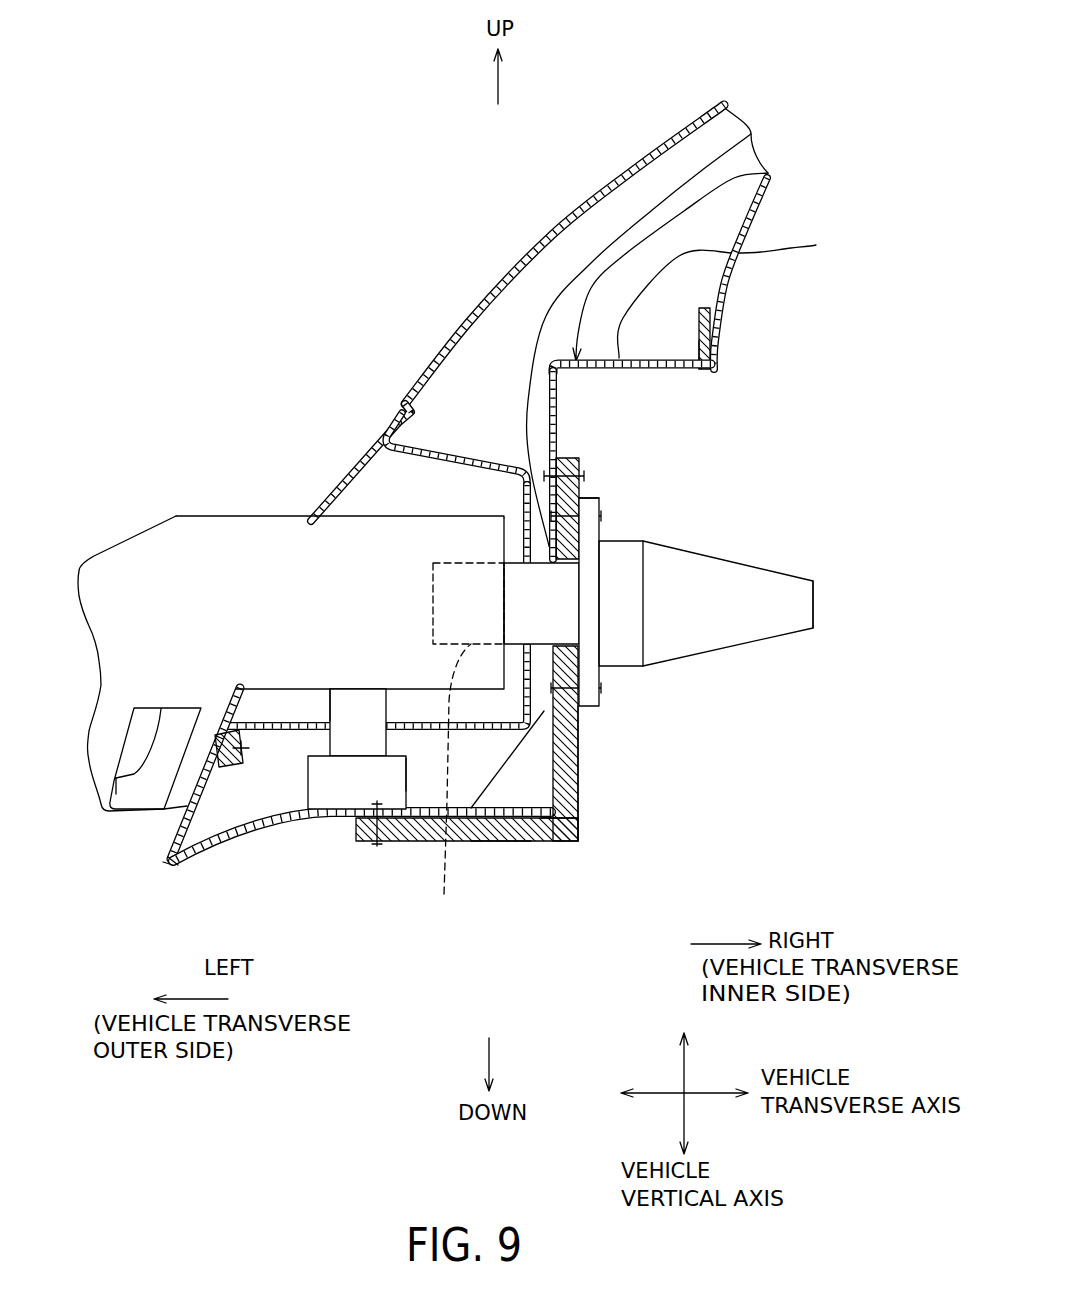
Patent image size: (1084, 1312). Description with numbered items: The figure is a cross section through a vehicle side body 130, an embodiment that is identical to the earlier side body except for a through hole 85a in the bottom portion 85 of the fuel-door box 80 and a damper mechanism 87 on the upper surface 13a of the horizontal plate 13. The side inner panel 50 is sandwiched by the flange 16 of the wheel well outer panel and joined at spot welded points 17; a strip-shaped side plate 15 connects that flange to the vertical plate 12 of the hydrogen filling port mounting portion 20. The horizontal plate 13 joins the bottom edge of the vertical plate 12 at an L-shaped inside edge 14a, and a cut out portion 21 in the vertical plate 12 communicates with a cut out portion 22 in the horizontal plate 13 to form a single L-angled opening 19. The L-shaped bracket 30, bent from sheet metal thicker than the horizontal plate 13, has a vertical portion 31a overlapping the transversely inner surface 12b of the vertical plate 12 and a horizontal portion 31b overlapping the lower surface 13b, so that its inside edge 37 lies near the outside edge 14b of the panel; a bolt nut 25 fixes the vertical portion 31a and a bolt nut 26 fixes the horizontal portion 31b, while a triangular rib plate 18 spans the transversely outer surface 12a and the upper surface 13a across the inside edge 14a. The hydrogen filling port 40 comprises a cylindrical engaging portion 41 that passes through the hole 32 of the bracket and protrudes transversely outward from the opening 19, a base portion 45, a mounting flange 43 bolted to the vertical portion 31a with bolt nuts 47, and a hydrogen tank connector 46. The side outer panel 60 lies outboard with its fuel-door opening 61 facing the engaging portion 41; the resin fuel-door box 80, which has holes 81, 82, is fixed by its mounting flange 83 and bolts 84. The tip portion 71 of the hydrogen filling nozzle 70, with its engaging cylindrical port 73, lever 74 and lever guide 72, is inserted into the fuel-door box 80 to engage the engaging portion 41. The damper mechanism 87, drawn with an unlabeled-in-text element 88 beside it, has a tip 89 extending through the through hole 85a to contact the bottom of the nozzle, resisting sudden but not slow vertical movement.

The side body 130 is at (255, 149).
The side outer panel 60 is at (548, 212).
The cut out portion 21 is at (750, 133).
The hydrogen filling port mounting portion 20 is at (767, 172).
The side inner panel 50 is at (769, 214).
The side plate 15 is at (738, 290).
The flange 16 is at (698, 302).
The spot welded points 17 is at (698, 318).
The vertical plate 12 is at (692, 369).
The transversely outer surface 12a is at (590, 380).
The transversely inner surface 12b is at (558, 425).
The L-shaped bracket 30 is at (580, 440).
The bolt nut 25 is at (593, 459).
The mounting flange 43 is at (596, 497).
The bolt nuts 47 is at (598, 510).
The hydrogen filling port 40 is at (769, 556).
The base portion 45 is at (620, 548).
The hydrogen tank connector 46 is at (781, 594).
The hole 32 is at (578, 613).
The vertical portion 31a is at (580, 743).
The opening 19 is at (577, 770).
The inside edge 37 is at (560, 838).
The outside edge 14b is at (577, 825).
The inside edge 14a is at (540, 822).
The rib plate 18 is at (497, 838).
The cut out portion 22 is at (508, 790).
The horizontal portion 31b is at (470, 740).
The engaging portion 41 is at (447, 781).
The horizontal plate 13 is at (362, 893).
The upper surface 13a is at (429, 818).
The lower surface 13b is at (300, 818).
The mounting hole 88 is at (432, 724).
The bolt nut 26 is at (377, 846).
The tip 89 is at (348, 678).
The damper mechanism 87 is at (310, 788).
The bottom portion 85 is at (318, 707).
The through hole 85a is at (238, 770).
The lever guide 72 is at (146, 810).
The lever 74 is at (100, 812).
The hydrogen filling nozzle 70 is at (246, 504).
The tip portion 71 is at (287, 513).
The engaging cylindrical port 73 is at (432, 562).
The hole 82 is at (342, 483).
The fuel-door opening 61 is at (378, 422).
The bolts 84 is at (385, 408).
The mounting flange 83 is at (395, 413).
The fuel-door box 80 is at (488, 443).
The hole 81 is at (405, 446).